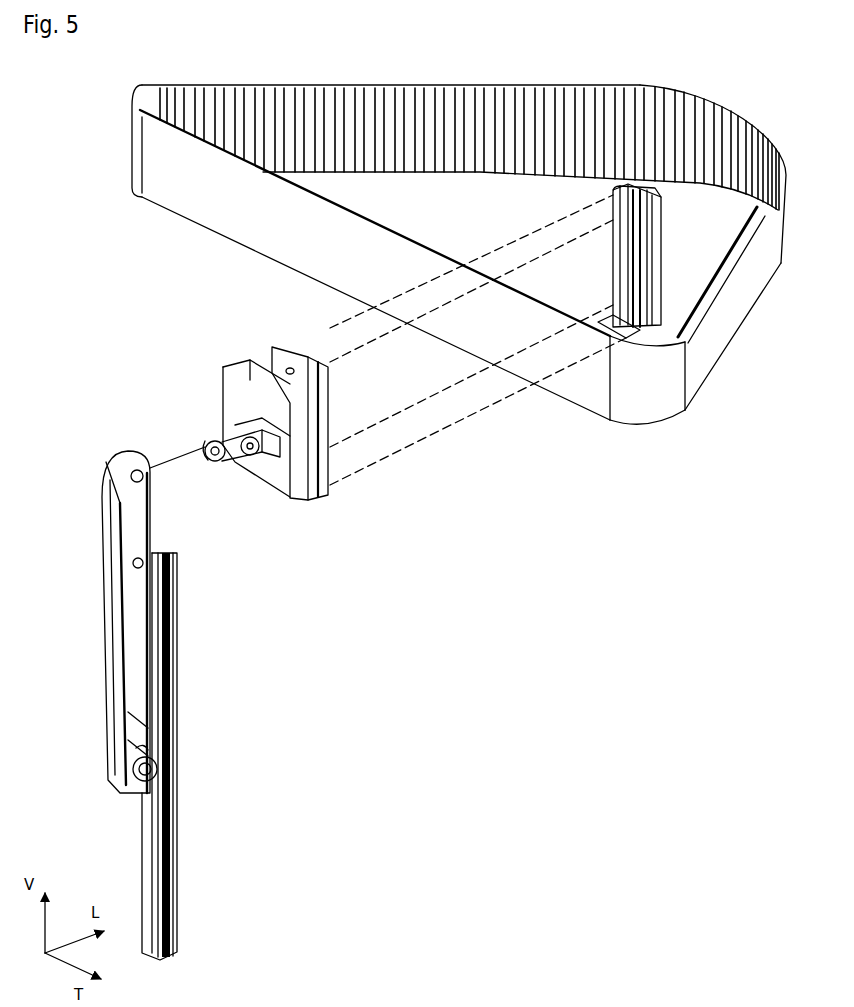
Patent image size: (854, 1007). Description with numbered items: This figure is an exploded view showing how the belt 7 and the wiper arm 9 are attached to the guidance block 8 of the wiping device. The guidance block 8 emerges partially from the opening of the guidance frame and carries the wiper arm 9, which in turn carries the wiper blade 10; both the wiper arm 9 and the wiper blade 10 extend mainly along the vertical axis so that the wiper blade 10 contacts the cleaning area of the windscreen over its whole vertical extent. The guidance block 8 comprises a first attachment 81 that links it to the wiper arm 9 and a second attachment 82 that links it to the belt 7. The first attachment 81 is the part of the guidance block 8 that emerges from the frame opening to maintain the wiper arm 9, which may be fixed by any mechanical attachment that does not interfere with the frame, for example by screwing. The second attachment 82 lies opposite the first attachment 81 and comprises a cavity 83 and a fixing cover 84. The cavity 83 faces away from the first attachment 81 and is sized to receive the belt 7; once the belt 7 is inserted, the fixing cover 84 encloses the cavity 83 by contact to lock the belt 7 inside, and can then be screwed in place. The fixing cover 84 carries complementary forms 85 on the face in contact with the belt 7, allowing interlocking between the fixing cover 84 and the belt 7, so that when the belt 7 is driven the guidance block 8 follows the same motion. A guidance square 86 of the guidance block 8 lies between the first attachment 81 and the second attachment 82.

The belt 7 is at (725, 304).
The guidance block 8 is at (303, 510).
The wiper arm 9 is at (113, 528).
The wiper blade 10 is at (173, 838).
The first attachment 81 is at (234, 444).
The second attachment 82 is at (485, 362).
The cavity 83 is at (330, 415).
The fixing cover 84 is at (637, 333).
The complementary forms 85 is at (662, 266).
The guidance square 86 is at (243, 395).